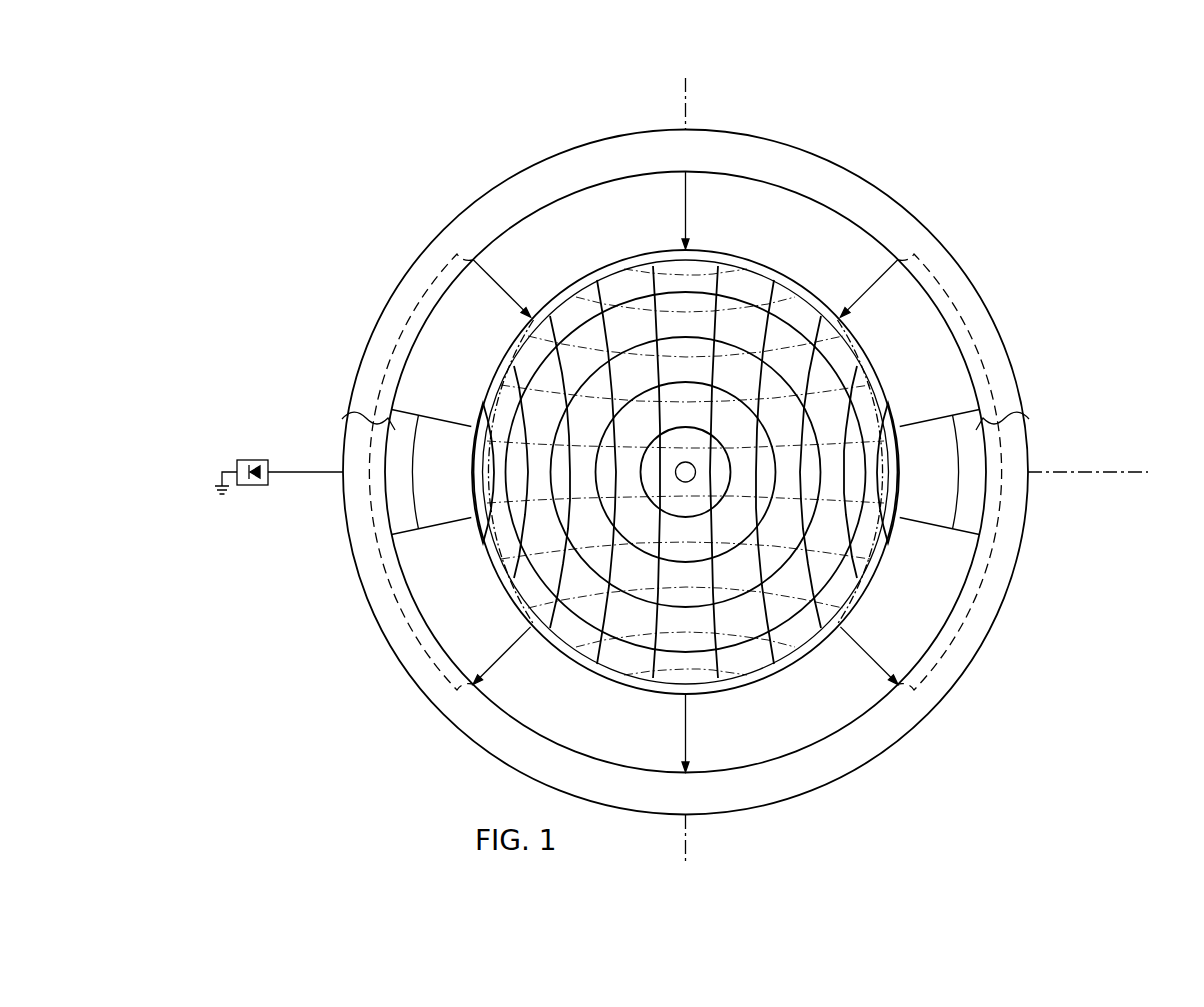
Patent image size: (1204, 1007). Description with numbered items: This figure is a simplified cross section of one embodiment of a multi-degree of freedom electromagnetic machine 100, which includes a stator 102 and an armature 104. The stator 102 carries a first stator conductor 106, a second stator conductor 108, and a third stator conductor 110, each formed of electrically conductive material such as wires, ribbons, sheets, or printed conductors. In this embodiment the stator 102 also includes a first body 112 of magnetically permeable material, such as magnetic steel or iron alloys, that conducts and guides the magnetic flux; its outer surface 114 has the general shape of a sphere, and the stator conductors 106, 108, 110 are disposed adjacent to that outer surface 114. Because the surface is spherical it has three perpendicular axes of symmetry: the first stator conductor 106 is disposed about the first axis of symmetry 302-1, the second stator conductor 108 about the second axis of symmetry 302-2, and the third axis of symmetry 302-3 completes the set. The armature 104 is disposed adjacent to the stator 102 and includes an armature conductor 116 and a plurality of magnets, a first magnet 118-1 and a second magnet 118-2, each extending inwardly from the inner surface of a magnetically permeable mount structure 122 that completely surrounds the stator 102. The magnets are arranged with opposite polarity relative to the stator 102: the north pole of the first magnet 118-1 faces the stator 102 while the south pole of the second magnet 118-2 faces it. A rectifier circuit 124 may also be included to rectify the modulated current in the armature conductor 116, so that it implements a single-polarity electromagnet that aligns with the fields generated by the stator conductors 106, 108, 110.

The multi-degree of freedom electromagnetic machine 100 is at (1033, 214).
The stator 102 is at (607, 262).
The armature 104 is at (876, 176).
The first stator conductor 106 is at (880, 472).
The second stator conductor 108 is at (641, 670).
The third stator conductor 110 is at (743, 300).
The first body 112 is at (673, 267).
The outer surface 114 is at (817, 292).
The armature conductor 116 is at (372, 422).
The first magnet 118-1 is at (510, 228).
The second magnet 118-2 is at (852, 712).
The mount structure 122 is at (985, 628).
The rectifier circuit 124 is at (255, 460).
The first axis of symmetry 302-1 is at (1085, 470).
The second axis of symmetry 302-2 is at (700, 472).
The third axis of symmetry 302-3 is at (684, 95).